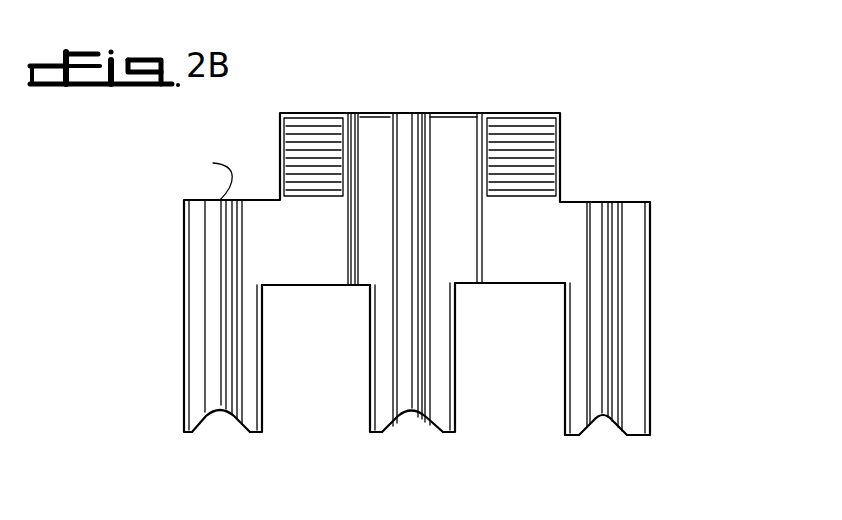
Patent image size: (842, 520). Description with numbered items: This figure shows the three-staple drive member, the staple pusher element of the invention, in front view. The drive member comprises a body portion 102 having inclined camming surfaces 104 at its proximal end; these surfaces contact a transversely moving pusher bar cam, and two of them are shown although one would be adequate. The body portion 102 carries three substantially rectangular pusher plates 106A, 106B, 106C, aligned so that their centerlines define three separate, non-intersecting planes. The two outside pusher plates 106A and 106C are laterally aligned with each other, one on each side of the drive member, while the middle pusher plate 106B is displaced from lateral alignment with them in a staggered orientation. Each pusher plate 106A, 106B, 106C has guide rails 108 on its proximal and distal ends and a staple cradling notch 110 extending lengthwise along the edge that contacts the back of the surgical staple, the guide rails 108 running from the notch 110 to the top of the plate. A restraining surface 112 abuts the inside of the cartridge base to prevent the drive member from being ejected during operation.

The body portion 102 is at (262, 147).
The inclined camming surfaces 104 is at (520, 121).
The guide rails 108 is at (417, 117).
The pusher plate 106A is at (652, 370).
The middle pusher plate 106B is at (370, 397).
The pusher plate 106C is at (184, 314).
The staple cradling notch 110 is at (230, 413).
The restraining surface 112 is at (328, 292).